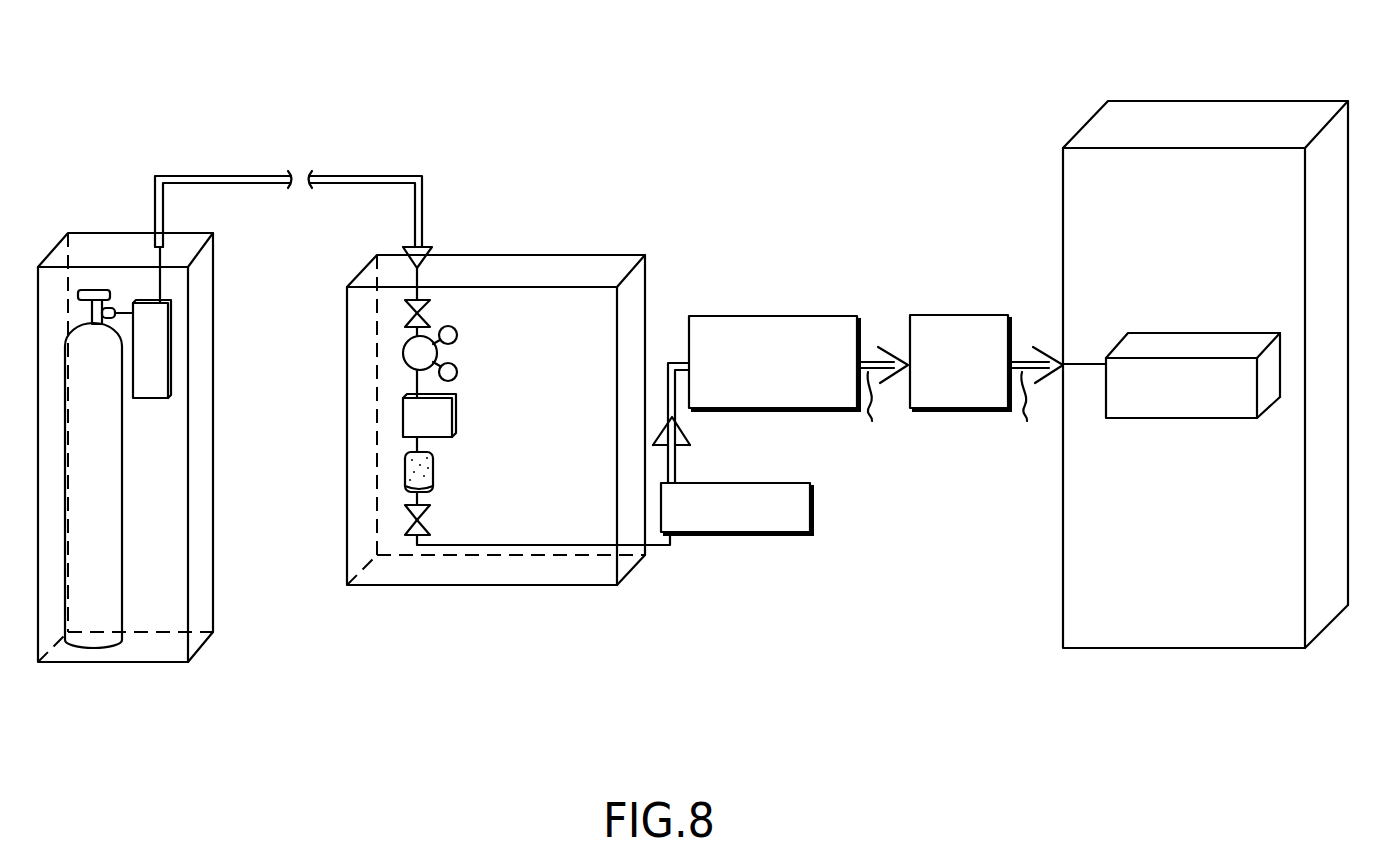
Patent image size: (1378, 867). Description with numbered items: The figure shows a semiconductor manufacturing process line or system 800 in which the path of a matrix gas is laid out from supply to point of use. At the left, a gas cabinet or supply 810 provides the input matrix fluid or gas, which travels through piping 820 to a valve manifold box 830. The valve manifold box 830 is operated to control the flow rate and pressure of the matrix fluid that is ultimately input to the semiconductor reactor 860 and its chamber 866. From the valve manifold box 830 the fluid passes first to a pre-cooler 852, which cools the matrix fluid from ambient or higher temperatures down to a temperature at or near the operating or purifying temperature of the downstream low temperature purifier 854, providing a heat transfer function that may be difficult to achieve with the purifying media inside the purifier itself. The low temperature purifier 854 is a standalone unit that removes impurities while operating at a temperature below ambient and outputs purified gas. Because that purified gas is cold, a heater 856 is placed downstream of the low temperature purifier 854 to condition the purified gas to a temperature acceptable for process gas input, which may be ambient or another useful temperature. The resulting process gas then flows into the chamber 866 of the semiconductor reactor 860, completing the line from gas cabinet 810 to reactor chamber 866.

The semiconductor manufacturing process line or system 800 is at (75, 156).
The gas cabinet or supply 810 is at (172, 462).
The piping 820 is at (393, 176).
The valve manifold box 830 is at (554, 347).
The pre-cooler 852 is at (753, 534).
The low temperature purifier 854 is at (840, 399).
The heater 856 is at (976, 386).
The semiconductor reactor 860 is at (1281, 202).
The chamber 866 is at (1197, 405).